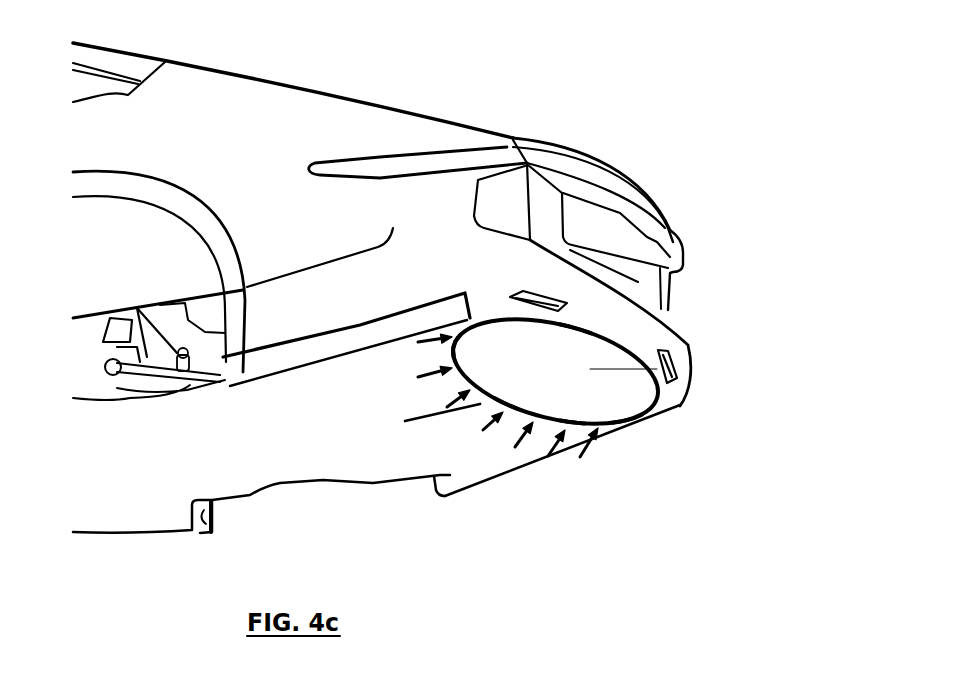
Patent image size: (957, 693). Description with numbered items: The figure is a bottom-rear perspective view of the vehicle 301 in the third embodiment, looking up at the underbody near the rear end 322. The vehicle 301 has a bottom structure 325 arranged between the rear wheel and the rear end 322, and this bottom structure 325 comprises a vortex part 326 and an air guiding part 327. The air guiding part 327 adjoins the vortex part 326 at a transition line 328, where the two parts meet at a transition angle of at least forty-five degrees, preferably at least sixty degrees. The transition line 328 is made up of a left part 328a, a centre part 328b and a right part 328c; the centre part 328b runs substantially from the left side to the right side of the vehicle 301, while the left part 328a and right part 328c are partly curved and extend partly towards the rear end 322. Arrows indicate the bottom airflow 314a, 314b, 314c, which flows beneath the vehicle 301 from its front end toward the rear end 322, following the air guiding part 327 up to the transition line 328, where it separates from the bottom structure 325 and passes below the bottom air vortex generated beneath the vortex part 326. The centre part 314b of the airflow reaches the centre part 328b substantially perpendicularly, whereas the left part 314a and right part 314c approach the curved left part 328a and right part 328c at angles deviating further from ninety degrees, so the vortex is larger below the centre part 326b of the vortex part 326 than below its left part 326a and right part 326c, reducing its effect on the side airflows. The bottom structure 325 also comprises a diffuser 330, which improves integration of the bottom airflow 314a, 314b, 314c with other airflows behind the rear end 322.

The vehicle 301 is at (565, 52).
The rear end 322 is at (672, 282).
The bottom structure 325 is at (428, 522).
The vortex part 326 is at (670, 370).
The left part of the vortex part 326a is at (497, 340).
The centre part of the vortex part 326b is at (572, 364).
The right part of the vortex part 326c is at (637, 402).
The air guiding part 327 is at (468, 480).
The transition line 328 is at (608, 424).
The left part of the transition line 328a is at (458, 350).
The centre part of the transition line 328b is at (502, 403).
The right part of the transition line 328c is at (565, 424).
The diffuser 330 is at (406, 424).
The left part of the bottom airflow 314a is at (428, 378).
The centre part of the bottom airflow 314b is at (459, 412).
The right part of the bottom airflow 314c is at (597, 433).